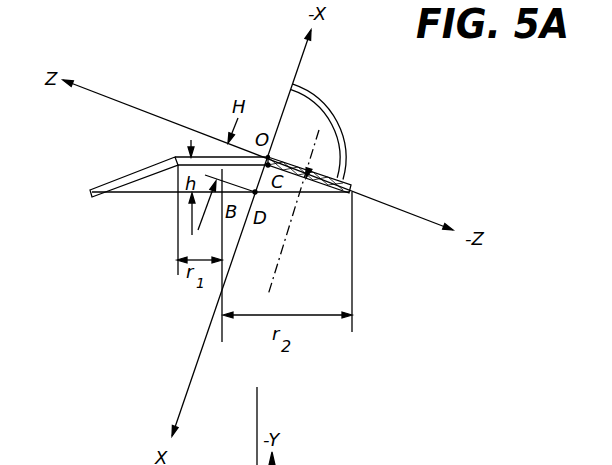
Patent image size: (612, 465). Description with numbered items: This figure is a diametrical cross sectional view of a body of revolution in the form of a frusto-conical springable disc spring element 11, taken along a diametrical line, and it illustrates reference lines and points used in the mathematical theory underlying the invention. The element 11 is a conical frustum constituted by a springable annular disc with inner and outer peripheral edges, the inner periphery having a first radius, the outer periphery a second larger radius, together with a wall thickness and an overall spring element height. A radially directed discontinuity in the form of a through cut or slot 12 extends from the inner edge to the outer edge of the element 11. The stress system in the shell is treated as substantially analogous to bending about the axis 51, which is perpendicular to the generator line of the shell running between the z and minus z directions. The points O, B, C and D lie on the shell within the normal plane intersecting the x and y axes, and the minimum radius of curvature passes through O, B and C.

The springable annular disc element 11 is at (360, 182).
The through cut or slot 12 is at (121, 194).
The bending axis 51 is at (294, 194).